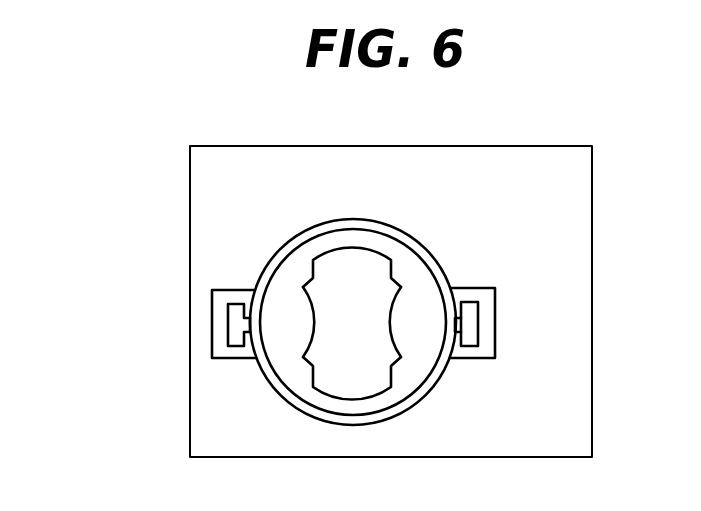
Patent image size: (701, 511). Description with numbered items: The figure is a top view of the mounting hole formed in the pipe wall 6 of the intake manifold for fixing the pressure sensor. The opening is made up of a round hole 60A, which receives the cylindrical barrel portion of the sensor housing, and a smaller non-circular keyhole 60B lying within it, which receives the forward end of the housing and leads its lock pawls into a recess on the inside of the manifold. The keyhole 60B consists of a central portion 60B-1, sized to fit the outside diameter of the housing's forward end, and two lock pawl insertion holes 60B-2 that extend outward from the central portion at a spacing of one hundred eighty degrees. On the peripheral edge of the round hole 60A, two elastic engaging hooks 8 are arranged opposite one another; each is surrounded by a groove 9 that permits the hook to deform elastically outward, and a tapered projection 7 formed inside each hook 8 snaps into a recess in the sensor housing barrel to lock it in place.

The pipe wall of the intake manifold 6 is at (573, 417).
The tapered projection 7 is at (458, 317).
The engaging hook 8 is at (468, 306).
The groove 9 is at (508, 295).
The round hole 60A is at (433, 363).
The keyhole 60B is at (256, 300).
The central portion 60B-1 is at (297, 300).
The lock pawl insertion hole 60B-2 is at (313, 262).